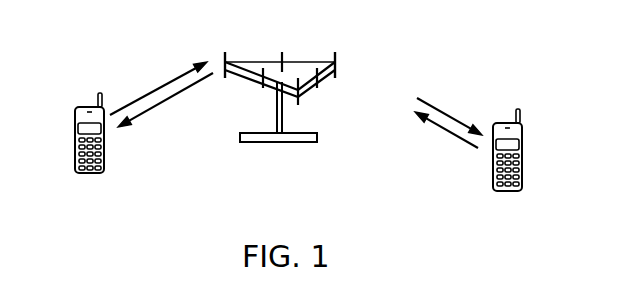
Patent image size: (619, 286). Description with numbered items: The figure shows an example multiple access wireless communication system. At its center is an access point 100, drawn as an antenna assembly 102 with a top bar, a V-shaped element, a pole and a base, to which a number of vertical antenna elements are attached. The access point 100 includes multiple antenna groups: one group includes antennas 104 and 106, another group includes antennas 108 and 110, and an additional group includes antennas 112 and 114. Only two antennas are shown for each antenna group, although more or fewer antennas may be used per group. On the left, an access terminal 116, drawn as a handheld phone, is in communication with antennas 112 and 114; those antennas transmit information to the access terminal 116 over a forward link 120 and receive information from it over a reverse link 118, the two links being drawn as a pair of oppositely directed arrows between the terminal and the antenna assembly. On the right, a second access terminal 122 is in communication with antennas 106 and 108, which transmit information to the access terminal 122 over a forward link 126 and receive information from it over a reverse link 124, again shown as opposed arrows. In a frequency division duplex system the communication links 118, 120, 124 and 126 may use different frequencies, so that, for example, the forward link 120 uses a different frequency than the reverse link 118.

The access point 100 is at (477, 45).
The base station antenna assembly 102 is at (280, 97).
The antenna 104 is at (299, 101).
The antenna 106 is at (318, 87).
The antenna 108 is at (337, 72).
The antenna 110 is at (282, 54).
The antenna 112 is at (225, 56).
The antenna 114 is at (262, 86).
The access terminal 116 is at (75, 122).
The reverse link 118 is at (167, 82).
The forward link 120 is at (155, 105).
The access terminal 122 is at (522, 140).
The reverse link 124 is at (455, 137).
The forward link 126 is at (450, 113).